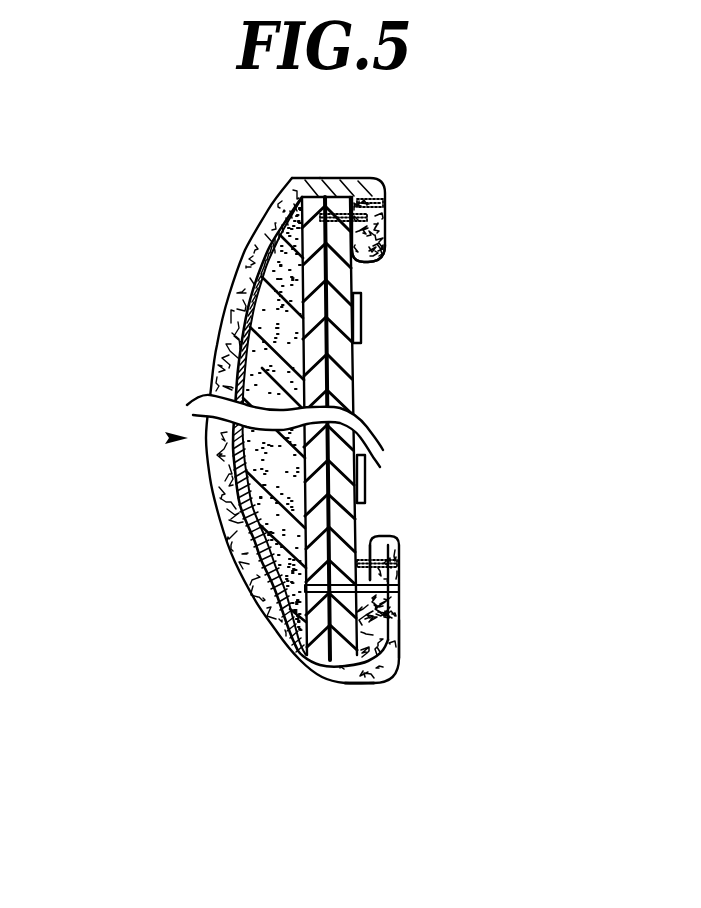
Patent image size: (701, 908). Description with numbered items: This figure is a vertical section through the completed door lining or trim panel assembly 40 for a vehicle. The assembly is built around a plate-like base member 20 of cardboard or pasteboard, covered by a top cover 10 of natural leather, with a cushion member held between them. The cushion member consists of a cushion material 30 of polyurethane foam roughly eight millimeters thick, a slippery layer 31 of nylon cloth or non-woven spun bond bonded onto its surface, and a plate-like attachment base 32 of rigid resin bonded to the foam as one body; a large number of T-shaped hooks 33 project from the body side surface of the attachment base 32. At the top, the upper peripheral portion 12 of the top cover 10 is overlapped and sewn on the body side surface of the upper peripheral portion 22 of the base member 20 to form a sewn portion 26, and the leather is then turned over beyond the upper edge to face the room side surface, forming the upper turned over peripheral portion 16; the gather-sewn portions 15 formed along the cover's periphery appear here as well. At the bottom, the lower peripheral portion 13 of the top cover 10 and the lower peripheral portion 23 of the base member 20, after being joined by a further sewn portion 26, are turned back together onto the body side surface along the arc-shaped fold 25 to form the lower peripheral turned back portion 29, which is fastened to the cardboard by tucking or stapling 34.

The top cover 10 is at (223, 336).
The upper peripheral portion 12 is at (357, 178).
The lower peripheral portion 13 is at (397, 537).
The gather-sewn portions 15 is at (383, 203).
The upper turned over peripheral portion 16 is at (372, 265).
The plate-like base member 20 is at (355, 372).
The upper peripheral portion 22 is at (318, 178).
The lower peripheral portion 23 is at (365, 540).
The fold 25 is at (395, 641).
The sewn portion 26 is at (383, 237).
The lower peripheral turned back portion 29 is at (390, 677).
The cushion material 30 is at (265, 497).
The slippery layer 31 is at (255, 568).
The plate-like attachment base 32 is at (362, 406).
The hooks 33 is at (360, 330).
The tucking or stapling 34 is at (400, 588).
The trim panel assembly 40 is at (168, 438).